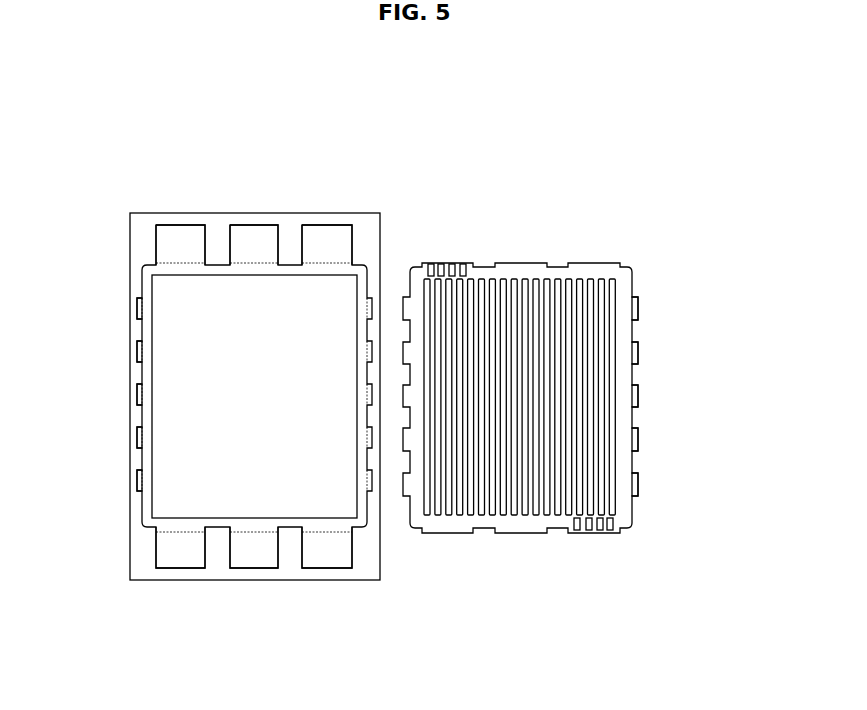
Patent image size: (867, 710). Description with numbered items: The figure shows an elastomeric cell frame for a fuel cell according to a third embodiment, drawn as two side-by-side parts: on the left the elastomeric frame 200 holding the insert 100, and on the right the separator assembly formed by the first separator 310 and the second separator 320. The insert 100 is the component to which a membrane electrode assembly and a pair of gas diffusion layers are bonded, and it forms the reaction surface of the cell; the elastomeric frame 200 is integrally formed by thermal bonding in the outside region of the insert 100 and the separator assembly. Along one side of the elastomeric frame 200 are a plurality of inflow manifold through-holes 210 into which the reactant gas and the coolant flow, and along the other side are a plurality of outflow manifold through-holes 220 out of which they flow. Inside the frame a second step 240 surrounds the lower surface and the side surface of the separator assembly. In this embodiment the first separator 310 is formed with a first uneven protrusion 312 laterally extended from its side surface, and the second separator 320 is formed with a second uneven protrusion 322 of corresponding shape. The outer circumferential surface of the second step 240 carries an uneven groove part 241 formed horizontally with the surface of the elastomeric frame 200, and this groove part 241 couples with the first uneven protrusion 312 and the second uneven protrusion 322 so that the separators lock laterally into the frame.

The insert 100 is at (170, 488).
The elastomeric frame 200 is at (214, 387).
The inflow manifold through-hole 210 is at (312, 232).
The outflow manifold through-hole 220 is at (313, 560).
The second step 240 is at (181, 528).
The uneven groove part 241 is at (140, 372).
The first separator 310 is at (585, 350).
The second separator 320 is at (585, 350).
The first uneven protrusion 312 is at (700, 396).
The second uneven protrusion 322 is at (635, 372).